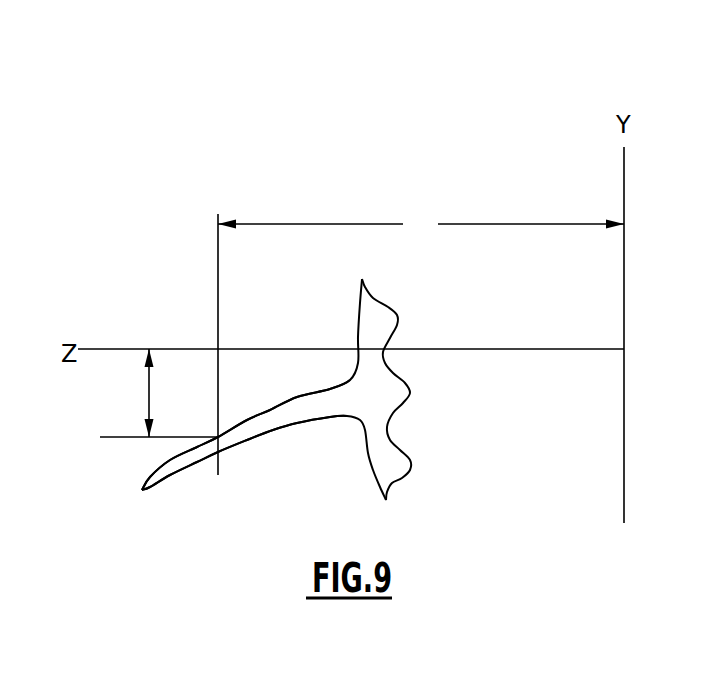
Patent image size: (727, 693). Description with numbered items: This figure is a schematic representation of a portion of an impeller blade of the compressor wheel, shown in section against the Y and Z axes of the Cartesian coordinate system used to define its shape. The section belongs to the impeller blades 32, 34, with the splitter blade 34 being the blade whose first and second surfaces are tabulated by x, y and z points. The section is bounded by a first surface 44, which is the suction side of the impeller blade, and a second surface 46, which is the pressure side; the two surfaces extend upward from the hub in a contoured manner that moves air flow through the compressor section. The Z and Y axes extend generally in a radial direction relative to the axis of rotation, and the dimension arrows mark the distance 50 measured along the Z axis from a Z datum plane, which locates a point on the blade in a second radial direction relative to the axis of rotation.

The impeller blade 32 is at (326, 125).
The splitter blade 34 is at (276, 389).
The first surface 44 is at (261, 398).
The second surface 46 is at (277, 450).
The distance 50 is at (100, 410).